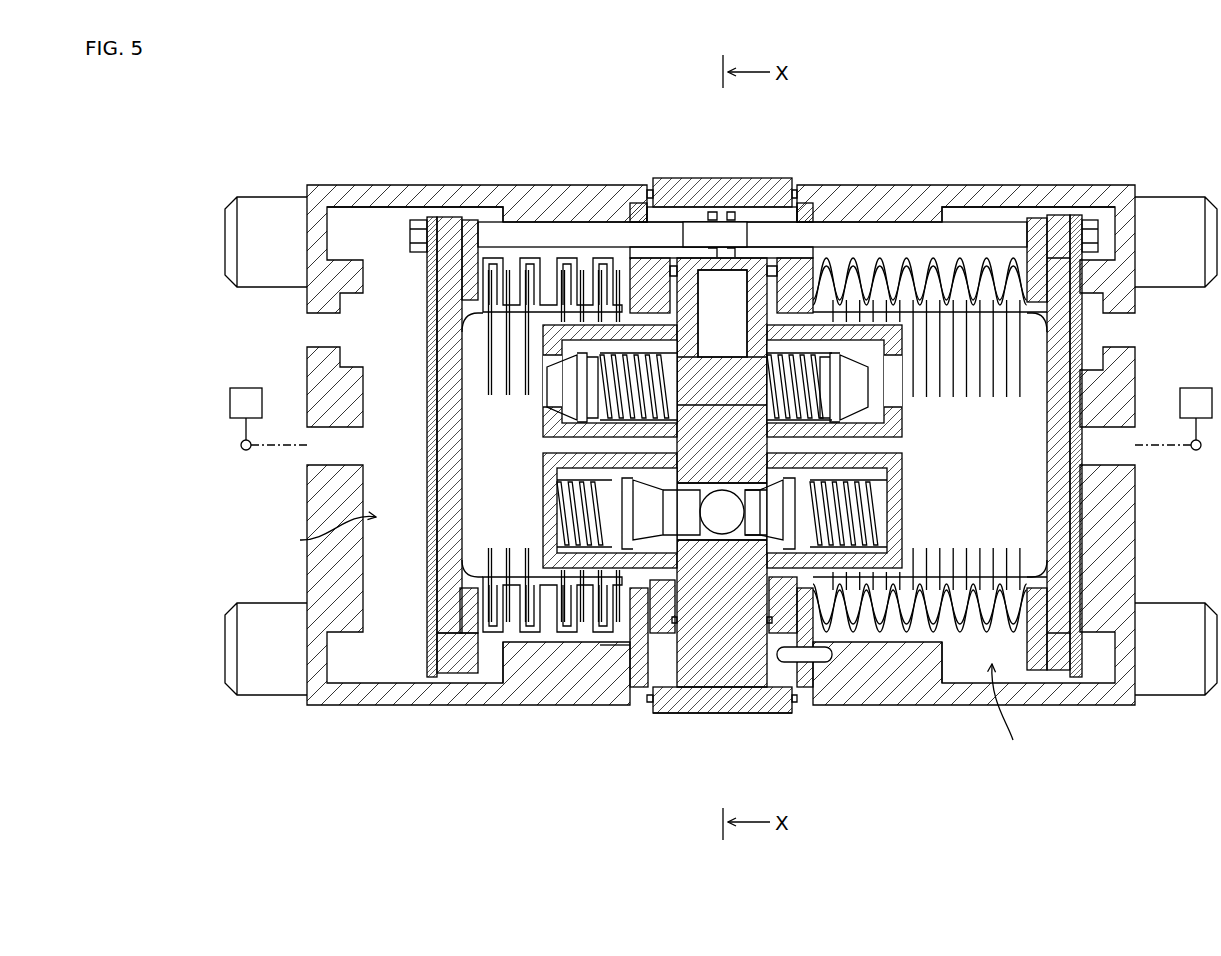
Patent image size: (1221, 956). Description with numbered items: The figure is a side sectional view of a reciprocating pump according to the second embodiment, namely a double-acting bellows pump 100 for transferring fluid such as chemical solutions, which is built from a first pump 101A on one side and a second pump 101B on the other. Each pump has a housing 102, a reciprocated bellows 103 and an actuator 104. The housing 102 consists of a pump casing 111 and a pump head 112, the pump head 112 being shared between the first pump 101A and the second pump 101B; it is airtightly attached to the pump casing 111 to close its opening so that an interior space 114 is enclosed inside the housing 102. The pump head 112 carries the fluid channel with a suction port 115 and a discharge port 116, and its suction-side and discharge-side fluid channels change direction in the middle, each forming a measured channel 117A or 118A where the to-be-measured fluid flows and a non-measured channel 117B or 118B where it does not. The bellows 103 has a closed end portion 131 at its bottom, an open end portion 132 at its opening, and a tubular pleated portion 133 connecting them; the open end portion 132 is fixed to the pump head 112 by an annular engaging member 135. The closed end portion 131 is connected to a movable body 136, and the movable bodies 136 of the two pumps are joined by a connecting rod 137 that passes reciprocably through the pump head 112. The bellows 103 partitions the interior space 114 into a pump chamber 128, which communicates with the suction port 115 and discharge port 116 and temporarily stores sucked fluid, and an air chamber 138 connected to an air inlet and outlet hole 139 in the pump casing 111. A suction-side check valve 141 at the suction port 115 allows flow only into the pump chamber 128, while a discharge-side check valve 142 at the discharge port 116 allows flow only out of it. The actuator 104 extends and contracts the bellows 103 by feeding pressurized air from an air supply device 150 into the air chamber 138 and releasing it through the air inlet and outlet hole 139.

The bellows pump 100 is at (720, 453).
The first pump 101A is at (331, 727).
The second pump 101B is at (1143, 727).
The housing 102 is at (982, 182).
The bellows 103 is at (549, 645).
The actuator 104 is at (723, 408).
The pump casing 111 is at (406, 184).
The pump head 112 is at (758, 702).
The interior space 114 is at (386, 226).
The suction port 115 is at (700, 536).
The discharge port 116 is at (697, 298).
The measured channel 117A is at (690, 640).
The non-measured channel 117B is at (722, 714).
The measured channel 118A is at (690, 368).
The non-measured channel 118B is at (722, 278).
The pump chamber 128 is at (509, 463).
The closed end portion 131 is at (440, 558).
The open end portion 132 is at (636, 690).
The pleated portion 133 is at (480, 676).
The annular engaging member 135 is at (625, 655).
The movable body 136 is at (426, 322).
The connecting rod 137 is at (835, 230).
The air chamber 138 is at (648, 637).
The air inlet and outlet hole 139 is at (303, 449).
The suction-side check valve 141 is at (547, 514).
The discharge-side check valve 142 is at (548, 384).
The air supply device 150 is at (264, 401).